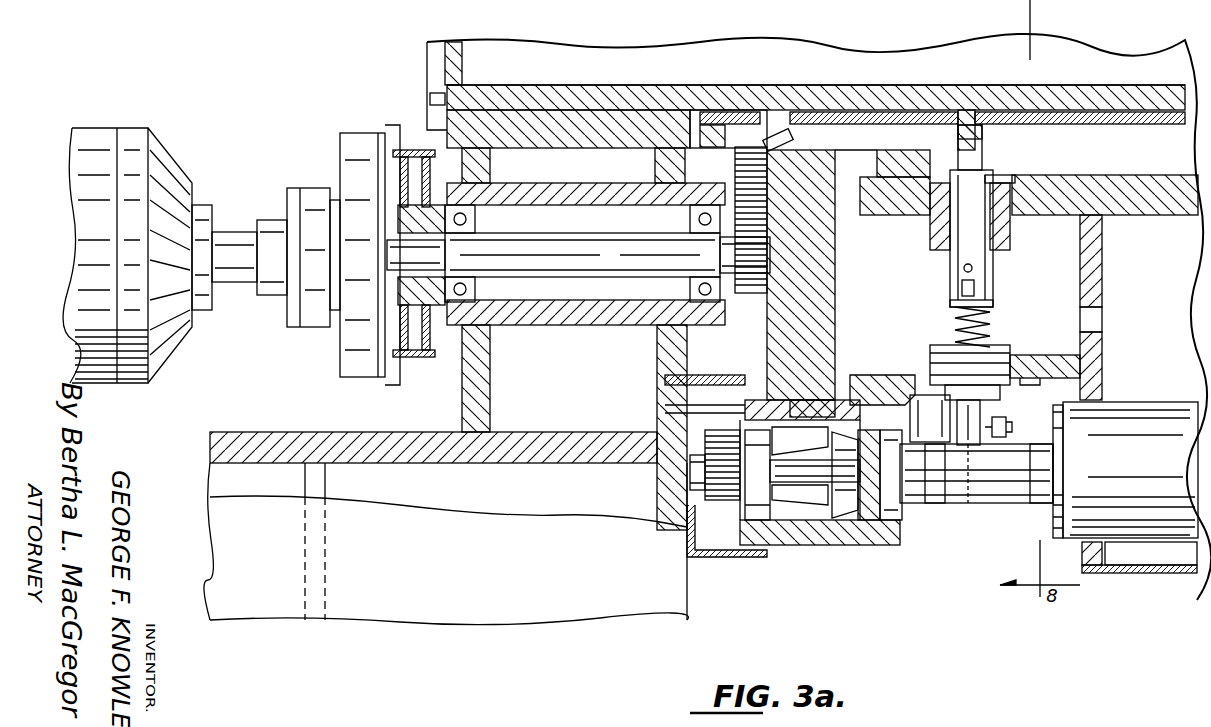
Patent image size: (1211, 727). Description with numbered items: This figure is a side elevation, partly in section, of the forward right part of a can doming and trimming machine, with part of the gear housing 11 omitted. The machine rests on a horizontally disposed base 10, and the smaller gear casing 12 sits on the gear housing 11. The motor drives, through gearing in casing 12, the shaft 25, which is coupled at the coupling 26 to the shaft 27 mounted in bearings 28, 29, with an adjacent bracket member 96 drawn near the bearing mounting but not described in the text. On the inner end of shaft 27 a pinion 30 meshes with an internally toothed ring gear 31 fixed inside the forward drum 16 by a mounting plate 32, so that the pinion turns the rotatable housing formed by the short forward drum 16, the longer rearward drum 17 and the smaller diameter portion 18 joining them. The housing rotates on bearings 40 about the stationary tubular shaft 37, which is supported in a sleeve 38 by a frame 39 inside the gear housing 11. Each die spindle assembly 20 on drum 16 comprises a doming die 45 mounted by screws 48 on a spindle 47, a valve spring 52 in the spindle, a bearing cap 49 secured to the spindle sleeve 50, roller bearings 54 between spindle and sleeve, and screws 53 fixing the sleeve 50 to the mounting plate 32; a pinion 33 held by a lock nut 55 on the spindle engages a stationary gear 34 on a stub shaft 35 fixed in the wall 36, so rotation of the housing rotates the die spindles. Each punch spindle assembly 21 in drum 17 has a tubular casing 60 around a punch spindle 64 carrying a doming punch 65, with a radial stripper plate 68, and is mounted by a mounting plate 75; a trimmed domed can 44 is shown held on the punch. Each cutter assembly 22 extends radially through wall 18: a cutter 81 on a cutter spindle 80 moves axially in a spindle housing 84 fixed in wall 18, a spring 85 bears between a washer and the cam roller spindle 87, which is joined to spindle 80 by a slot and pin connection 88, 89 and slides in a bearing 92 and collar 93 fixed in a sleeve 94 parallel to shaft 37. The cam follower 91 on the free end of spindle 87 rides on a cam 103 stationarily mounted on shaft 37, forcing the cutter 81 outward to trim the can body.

The base 10 is at (560, 600).
The gear housing 11 is at (460, 390).
The gear casing 12 is at (180, 190).
The forward drum 16 is at (757, 552).
The rearward drum 17 is at (1132, 573).
The smaller diameter portion 18 is at (1030, 378).
The die spindle assembly 20 is at (855, 538).
The punch spindle assembly 21 is at (1148, 530).
The cutter assembly 22 is at (970, 432).
The shaft 25 is at (237, 275).
The coupling 26 is at (303, 318).
The shaft 27 is at (560, 272).
The bearing 28 is at (438, 318).
The bearing 29 is at (690, 219).
The pinion 30 is at (745, 250).
The ring gear 31 is at (745, 145).
The mounting plate 32 is at (798, 150).
The pinion 33 is at (722, 500).
The stationary gear 34 is at (665, 413).
The stub shaft 35 is at (665, 380).
The wall 36 is at (658, 348).
The tubular shaft 37 is at (1128, 100).
The sleeve 38 is at (520, 118).
The frame 39 is at (555, 195).
The bearing 40 is at (780, 128).
The trimmed domed can 44 is at (968, 500).
The doming die 45 is at (895, 515).
The spindle 47 is at (805, 462).
The screw 48 is at (870, 512).
The bearing cap 49 is at (840, 532).
The spindle sleeve 50 is at (818, 545).
The valve spring 52 is at (805, 485).
The screw 53 is at (848, 400).
The roller bearing 54 is at (757, 512).
The lock nut 55 is at (690, 478).
The tubular casing 60 is at (1115, 410).
The punch spindle 64 is at (1032, 495).
The doming punch 65 is at (935, 500).
The stripper plate 68 is at (1056, 538).
The mounting plate 75 is at (1102, 250).
The cutter spindle 80 is at (958, 425).
The cutter 81 is at (1000, 420).
The spindle housing 84 is at (1010, 352).
The spring 85 is at (957, 318).
The cam roller spindle 87 is at (993, 285).
The slot 88 is at (962, 289).
The pin 89 is at (962, 268).
The cam follower 91 is at (985, 155).
The bearing 92 is at (1000, 235).
The collar 93 is at (930, 235).
The sleeve 94 is at (1098, 190).
The bolt bracket 96 is at (400, 155).
The cam 103 is at (975, 125).